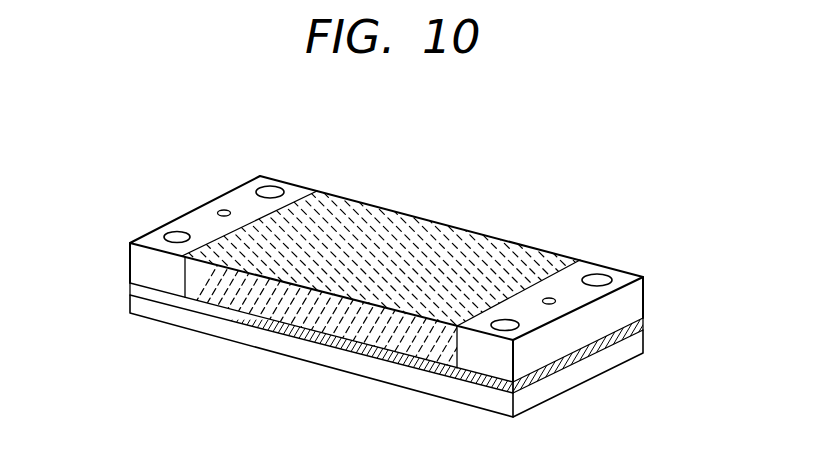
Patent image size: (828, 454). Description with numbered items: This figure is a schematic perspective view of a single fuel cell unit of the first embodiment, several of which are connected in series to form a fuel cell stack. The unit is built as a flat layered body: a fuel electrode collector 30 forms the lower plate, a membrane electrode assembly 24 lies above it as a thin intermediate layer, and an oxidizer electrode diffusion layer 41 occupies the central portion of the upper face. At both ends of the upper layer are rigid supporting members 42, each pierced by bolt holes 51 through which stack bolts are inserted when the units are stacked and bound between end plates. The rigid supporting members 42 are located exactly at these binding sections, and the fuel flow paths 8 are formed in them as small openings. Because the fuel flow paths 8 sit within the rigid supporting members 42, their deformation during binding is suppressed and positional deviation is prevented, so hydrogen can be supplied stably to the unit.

The fuel flow paths 8 is at (232, 218).
The membrane electrode assembly 24 is at (348, 346).
The fuel electrode collector 30 is at (590, 363).
The oxidizer electrode diffusion layer 41 is at (373, 230).
The rigid supporting members 42 is at (145, 268).
The bolt holes 51 is at (270, 187).